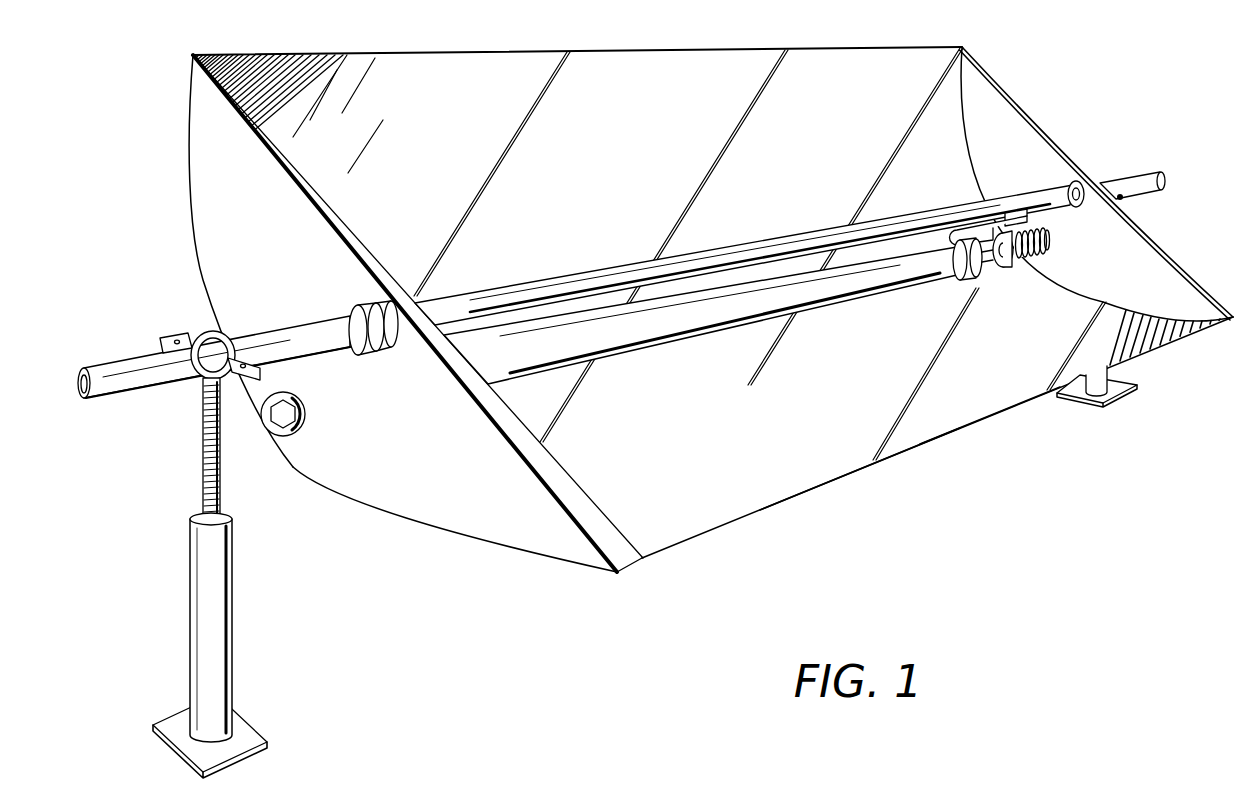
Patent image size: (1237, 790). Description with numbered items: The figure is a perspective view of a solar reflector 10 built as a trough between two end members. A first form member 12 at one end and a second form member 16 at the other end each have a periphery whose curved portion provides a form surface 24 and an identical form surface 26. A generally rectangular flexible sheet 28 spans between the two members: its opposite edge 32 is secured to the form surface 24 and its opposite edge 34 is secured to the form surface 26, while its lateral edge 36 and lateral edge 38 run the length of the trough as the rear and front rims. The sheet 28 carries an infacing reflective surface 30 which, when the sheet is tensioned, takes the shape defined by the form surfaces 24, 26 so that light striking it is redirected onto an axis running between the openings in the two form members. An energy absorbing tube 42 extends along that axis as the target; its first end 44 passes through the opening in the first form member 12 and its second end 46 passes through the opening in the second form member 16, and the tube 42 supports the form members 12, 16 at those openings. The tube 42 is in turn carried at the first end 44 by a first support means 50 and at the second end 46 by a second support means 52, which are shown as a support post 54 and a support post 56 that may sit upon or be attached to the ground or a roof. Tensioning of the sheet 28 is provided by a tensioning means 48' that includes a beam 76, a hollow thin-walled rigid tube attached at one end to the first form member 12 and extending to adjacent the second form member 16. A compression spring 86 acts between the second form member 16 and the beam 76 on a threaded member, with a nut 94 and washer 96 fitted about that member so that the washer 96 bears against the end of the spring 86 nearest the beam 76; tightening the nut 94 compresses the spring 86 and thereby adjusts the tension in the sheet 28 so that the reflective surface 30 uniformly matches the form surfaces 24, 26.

The solar reflector 10 is at (1062, 118).
The first form member 12 is at (357, 487).
The second form member 16 is at (1140, 275).
The form surface 24 is at (431, 533).
The form surface 26 is at (979, 172).
The flexible sheet 28 is at (800, 497).
The reflective surface 30 is at (823, 430).
The opposite edge 32 is at (645, 562).
The opposite edge 34 is at (1202, 326).
The lateral edge 36 is at (679, 50).
The lateral edge 38 is at (973, 425).
The energy absorbing tube 42 is at (741, 246).
The first end 44 is at (278, 337).
The second end 46 is at (1143, 170).
The tensioning means 48' is at (1017, 268).
The first support means 50 is at (162, 302).
The second support means 52 is at (1097, 168).
The support post 54 is at (230, 657).
The support post 56 is at (1108, 369).
The beam 76 is at (724, 307).
The compression spring 86 is at (1044, 250).
The nut 94 is at (995, 265).
The washer 96 is at (1010, 264).